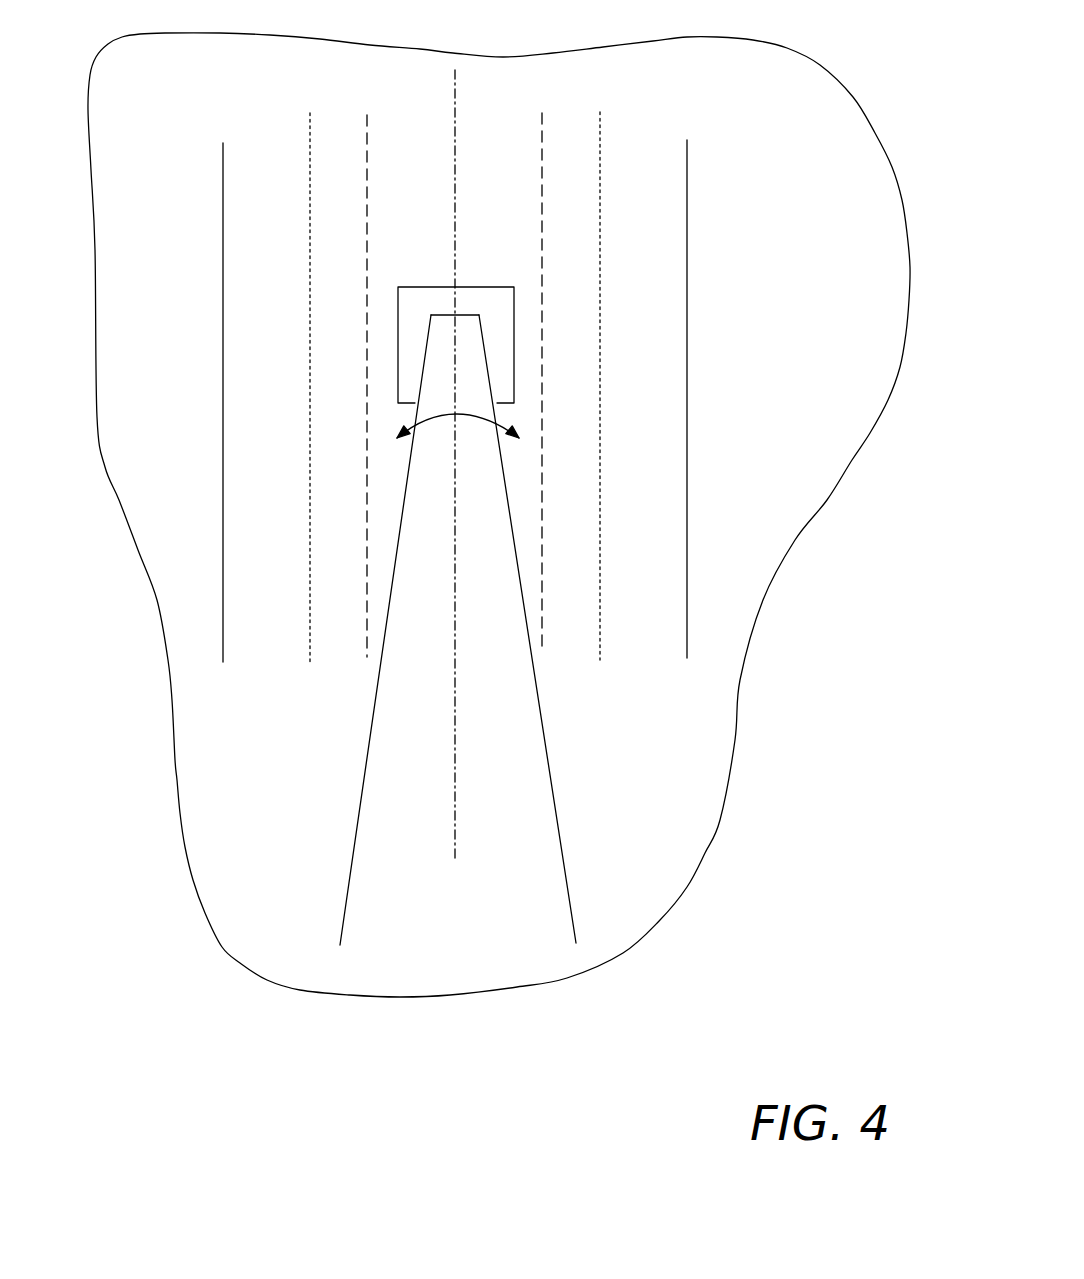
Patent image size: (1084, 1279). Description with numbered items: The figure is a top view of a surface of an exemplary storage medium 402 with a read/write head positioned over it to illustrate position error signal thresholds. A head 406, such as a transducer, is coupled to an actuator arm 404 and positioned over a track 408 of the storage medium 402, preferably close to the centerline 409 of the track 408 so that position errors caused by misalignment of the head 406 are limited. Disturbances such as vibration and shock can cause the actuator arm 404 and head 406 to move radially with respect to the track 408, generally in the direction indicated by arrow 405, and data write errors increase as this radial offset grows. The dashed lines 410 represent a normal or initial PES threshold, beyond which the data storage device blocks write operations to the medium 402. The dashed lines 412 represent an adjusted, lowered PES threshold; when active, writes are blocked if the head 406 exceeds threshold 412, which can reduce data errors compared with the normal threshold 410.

The storage medium 402 is at (755, 227).
The actuator arm 404 is at (528, 777).
The arrow 405 is at (473, 418).
The head 406 is at (490, 305).
The track 408 is at (478, 173).
The centerline 409 is at (456, 110).
The normal PES threshold 410 is at (312, 122).
The lowered PES threshold 412 is at (368, 187).